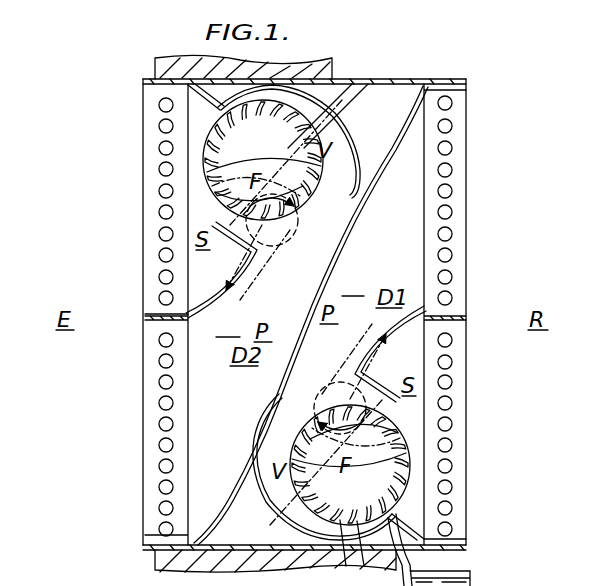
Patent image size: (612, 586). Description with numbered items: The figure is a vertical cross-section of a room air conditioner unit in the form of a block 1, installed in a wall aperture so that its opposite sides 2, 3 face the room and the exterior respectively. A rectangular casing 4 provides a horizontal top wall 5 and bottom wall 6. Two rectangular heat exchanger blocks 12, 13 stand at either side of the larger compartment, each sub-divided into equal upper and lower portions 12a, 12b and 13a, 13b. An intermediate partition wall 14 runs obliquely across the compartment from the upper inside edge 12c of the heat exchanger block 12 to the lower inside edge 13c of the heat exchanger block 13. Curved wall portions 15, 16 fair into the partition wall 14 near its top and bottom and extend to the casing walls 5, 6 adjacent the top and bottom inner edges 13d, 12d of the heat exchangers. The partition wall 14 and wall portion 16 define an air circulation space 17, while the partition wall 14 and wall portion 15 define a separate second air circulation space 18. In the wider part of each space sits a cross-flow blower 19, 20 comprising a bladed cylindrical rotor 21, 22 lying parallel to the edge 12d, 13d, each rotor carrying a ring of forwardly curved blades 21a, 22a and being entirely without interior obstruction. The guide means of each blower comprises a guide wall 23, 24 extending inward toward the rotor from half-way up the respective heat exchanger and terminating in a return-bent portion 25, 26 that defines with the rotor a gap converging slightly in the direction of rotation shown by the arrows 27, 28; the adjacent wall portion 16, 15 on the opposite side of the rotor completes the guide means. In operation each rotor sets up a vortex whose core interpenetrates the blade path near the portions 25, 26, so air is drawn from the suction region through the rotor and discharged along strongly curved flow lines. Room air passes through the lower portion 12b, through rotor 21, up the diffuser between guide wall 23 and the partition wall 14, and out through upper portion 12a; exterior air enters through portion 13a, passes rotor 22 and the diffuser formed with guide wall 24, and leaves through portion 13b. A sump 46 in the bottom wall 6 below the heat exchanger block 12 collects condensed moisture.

The block 1 is at (142, 79).
The side 2 is at (470, 240).
The side 3 is at (143, 317).
The rectangular casing 4 is at (148, 551).
The top wall 5 is at (340, 79).
The bottom wall 6 is at (304, 565).
The heat exchanger block 12 is at (470, 318).
The upper portion of heat exchanger block 12a is at (468, 210).
The lower portion of heat exchanger block 12b is at (466, 344).
The upper inside edge 12c is at (428, 98).
The bottom inner edge 12d is at (426, 537).
The heat exchanger block 13 is at (146, 320).
The upper portion of heat exchanger block 13a is at (148, 170).
The lower portion of heat exchanger block 13b is at (150, 388).
The lower inside edge 13c is at (152, 530).
The top inner edge 13d is at (162, 93).
The partition wall 14 is at (334, 256).
The curved wall portion 15 is at (352, 195).
The curved wall portion 16 is at (272, 515).
The air circulation space 17 is at (356, 285).
The air circulation space 18 is at (230, 326).
The cross-flow blower 19 is at (402, 430).
The cross-flow blower 20 is at (203, 184).
The bladed cylindrical rotor 21 is at (372, 478).
The forwardly curved blades 21a is at (364, 553).
The bladed cylindrical rotor 22 is at (232, 160).
The forwardly curved blades 22a is at (330, 124).
The guide wall 23 is at (372, 352).
The guide wall 24 is at (240, 300).
The return-bent portion 25 is at (398, 400).
The return-bent portion 26 is at (238, 270).
The arrow 27 is at (372, 490).
The arrow 28 is at (240, 141).
The sump 46 is at (450, 550).